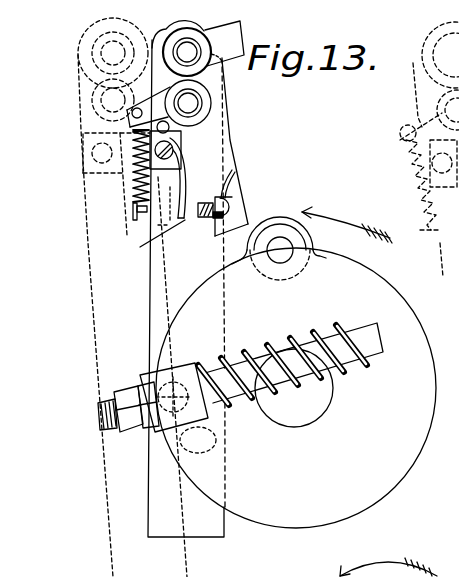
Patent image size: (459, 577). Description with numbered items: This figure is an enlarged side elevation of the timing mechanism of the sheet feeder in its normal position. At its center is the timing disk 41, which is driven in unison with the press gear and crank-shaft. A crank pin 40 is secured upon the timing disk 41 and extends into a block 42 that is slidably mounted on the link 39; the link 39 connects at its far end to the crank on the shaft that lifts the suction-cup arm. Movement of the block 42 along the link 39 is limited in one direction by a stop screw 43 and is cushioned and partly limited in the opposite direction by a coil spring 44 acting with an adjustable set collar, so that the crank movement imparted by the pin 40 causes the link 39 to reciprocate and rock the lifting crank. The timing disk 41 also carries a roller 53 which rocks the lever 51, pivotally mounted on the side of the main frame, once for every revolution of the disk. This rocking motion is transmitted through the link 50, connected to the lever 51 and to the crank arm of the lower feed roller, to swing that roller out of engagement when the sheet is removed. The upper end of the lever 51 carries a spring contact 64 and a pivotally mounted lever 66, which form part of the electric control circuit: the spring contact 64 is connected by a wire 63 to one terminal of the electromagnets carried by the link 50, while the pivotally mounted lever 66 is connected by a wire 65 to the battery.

The link 39 is at (310, 363).
The crank pin 40 is at (198, 441).
The timing disk 41 is at (296, 388).
The block 42 is at (178, 374).
The stop screw 43 is at (135, 434).
The coil spring 44 is at (282, 359).
The link 50 is at (238, 44).
The lever 51 is at (186, 288).
The roller 53 is at (293, 208).
The wire 63 is at (132, 117).
The spring contact 64 is at (161, 245).
The wire 65 is at (238, 200).
The pivotally mounted lever 66 is at (233, 139).